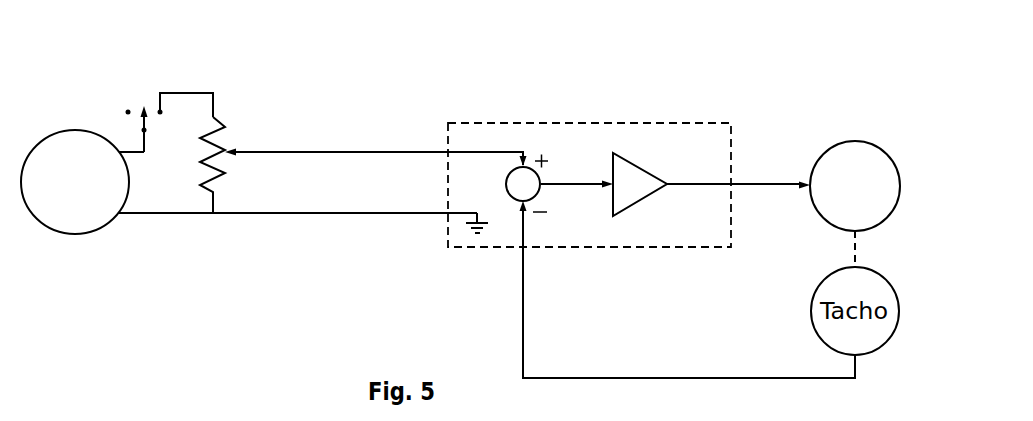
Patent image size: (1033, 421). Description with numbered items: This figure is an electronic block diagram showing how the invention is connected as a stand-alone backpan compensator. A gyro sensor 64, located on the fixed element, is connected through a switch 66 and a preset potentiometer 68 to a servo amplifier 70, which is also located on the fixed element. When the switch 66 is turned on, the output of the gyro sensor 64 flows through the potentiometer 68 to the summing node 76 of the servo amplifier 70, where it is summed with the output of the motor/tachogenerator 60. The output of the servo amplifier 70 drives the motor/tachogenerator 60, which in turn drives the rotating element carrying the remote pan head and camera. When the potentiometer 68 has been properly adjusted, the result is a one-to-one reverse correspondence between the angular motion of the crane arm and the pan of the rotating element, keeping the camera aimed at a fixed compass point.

The motor/tachogenerator 60 is at (865, 142).
The gyro sensor 64 is at (73, 233).
The switch 66 is at (150, 125).
The preset potentiometer 68 is at (225, 185).
The servo amplifier 70 is at (731, 170).
The summing node 76 is at (537, 195).